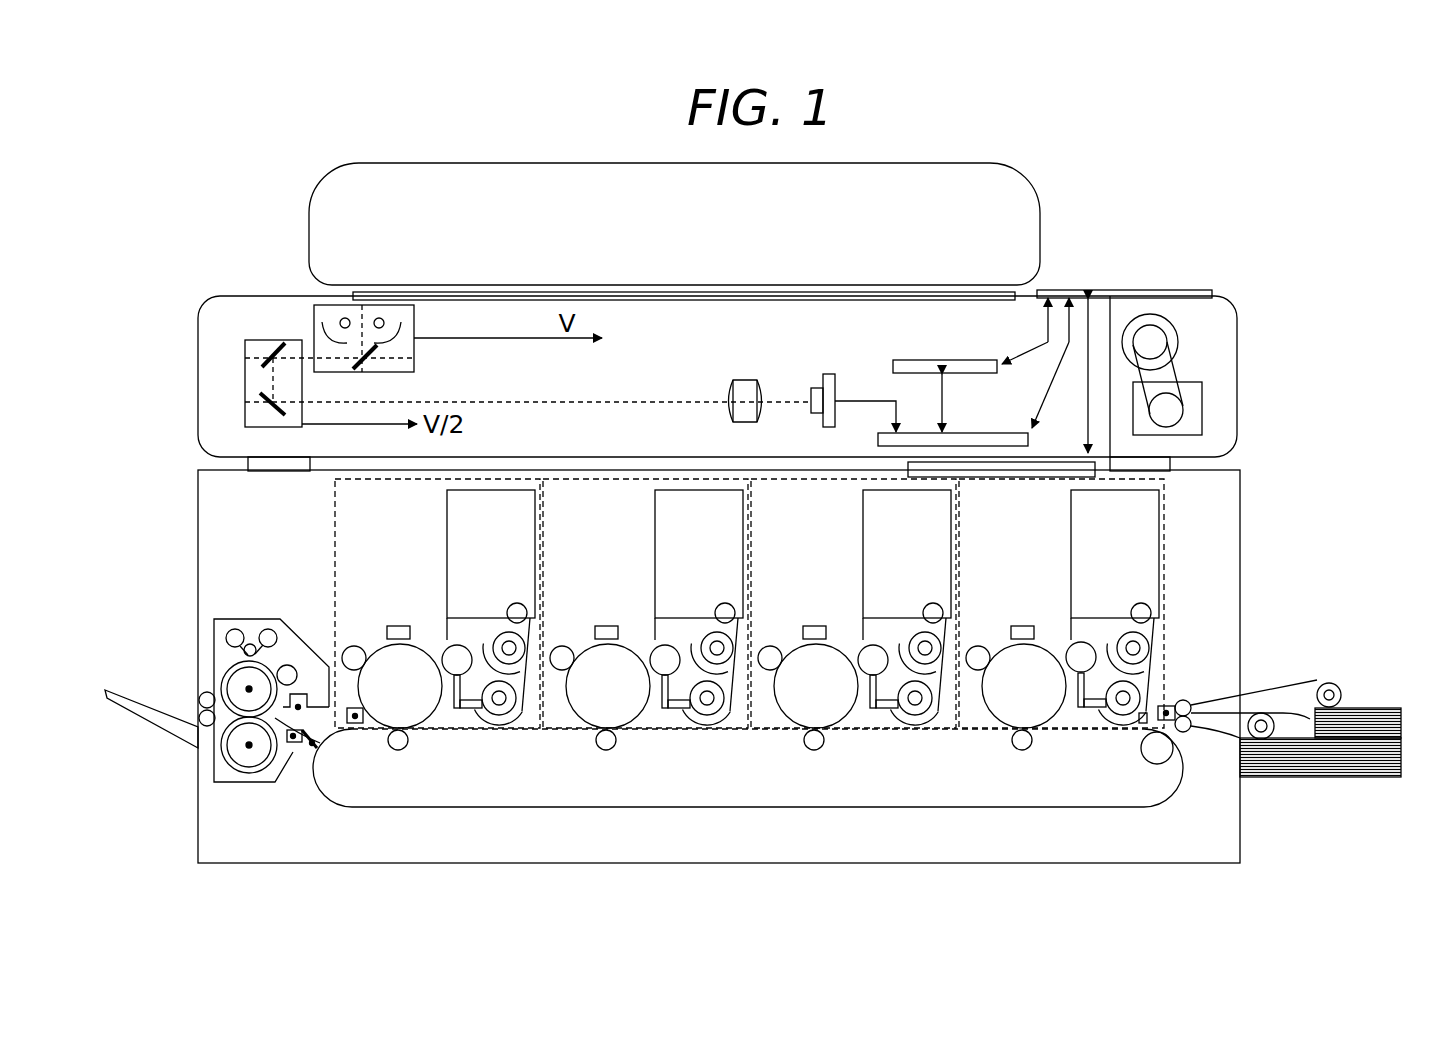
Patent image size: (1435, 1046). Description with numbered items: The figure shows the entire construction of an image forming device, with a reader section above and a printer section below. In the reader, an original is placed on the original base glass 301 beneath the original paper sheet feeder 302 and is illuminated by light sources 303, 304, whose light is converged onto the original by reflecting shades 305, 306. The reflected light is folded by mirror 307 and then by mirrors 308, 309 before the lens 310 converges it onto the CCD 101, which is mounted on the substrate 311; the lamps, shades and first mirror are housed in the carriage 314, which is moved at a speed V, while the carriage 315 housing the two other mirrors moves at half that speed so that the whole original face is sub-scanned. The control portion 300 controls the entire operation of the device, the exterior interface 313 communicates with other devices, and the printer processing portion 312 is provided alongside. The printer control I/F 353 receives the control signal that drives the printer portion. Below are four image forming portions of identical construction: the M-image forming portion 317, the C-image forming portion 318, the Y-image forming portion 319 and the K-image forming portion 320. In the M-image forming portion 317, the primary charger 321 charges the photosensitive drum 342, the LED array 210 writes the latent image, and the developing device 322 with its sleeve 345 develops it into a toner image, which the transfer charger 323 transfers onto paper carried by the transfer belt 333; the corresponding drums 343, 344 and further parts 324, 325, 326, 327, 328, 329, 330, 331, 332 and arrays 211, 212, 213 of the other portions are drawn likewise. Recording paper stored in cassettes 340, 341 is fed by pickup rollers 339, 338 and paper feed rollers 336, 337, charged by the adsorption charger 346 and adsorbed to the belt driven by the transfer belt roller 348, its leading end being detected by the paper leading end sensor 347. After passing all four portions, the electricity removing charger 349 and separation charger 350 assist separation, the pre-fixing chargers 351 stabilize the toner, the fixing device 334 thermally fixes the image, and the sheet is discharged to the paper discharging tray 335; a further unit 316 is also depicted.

The CCD 101 is at (812, 388).
The LED array 210 is at (1022, 626).
The sensor 211 is at (814, 626).
The sensor 212 is at (606, 626).
The sensor 213 is at (398, 626).
The control portion 300 is at (1138, 290).
The original base glass 301 is at (482, 292).
The original paper sheet feeder 302 is at (1040, 196).
The light source 303 is at (382, 318).
The light source 304 is at (345, 318).
The reflecting shade 305 is at (414, 329).
The reflecting shade 306 is at (322, 334).
The mirror 307 is at (380, 371).
The mirror 308 is at (245, 350).
The mirror 309 is at (245, 416).
The lens 310 is at (746, 380).
The substrate 311 is at (838, 380).
The printer processing portion 312 is at (1002, 433).
The exterior interface 313 is at (944, 360).
The carriage 314 is at (415, 358).
The carriage 315 is at (245, 384).
The drive unit 316 is at (1238, 345).
The M-image forming portion 317 is at (1168, 522).
The C-image forming portion 318 is at (795, 479).
The Y-image forming portion 319 is at (583, 479).
The K-image forming portion 320 is at (335, 500).
The primary charger 321 is at (979, 646).
The developing device 322 is at (1071, 520).
The transfer charger 323 is at (1022, 750).
The charging roller 324 is at (771, 646).
The toner container 325 is at (863, 520).
The transfer roller 326 is at (814, 750).
The charging roller 327 is at (563, 646).
The toner container 328 is at (655, 520).
The transfer roller 329 is at (606, 750).
The charging roller 330 is at (355, 646).
The toner container 331 is at (447, 520).
The transfer roller 332 is at (398, 750).
The transfer belt 333 is at (513, 807).
The fixing device 334 is at (246, 619).
The paper discharging tray 335 is at (150, 712).
The paper feed roller 336 is at (1192, 700).
The paper feed roller 337 is at (1188, 735).
The pickup roller 338 is at (1262, 732).
The pickup roller 339 is at (1330, 690).
The cassette 340 is at (1374, 778).
The cassette 341 is at (1380, 710).
The photosensitive drum 342 is at (1009, 712).
The photosensitive drum 343 is at (801, 712).
The photosensitive drum 344 is at (593, 712).
The sleeve 345 is at (385, 712).
The adsorption charger 346 is at (866, 646).
The paper leading end sensor 347 is at (658, 646).
The transfer belt roller 348 is at (450, 646).
The electricity removing charger 349 is at (350, 724).
The separation charger 350 is at (293, 752).
The pre-fixing charger 351 is at (303, 695).
The printer control I/F 353 is at (1058, 462).